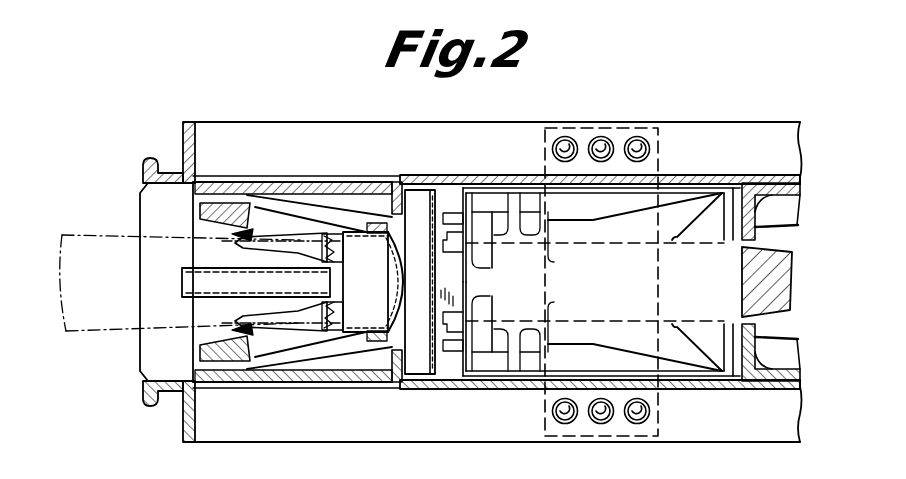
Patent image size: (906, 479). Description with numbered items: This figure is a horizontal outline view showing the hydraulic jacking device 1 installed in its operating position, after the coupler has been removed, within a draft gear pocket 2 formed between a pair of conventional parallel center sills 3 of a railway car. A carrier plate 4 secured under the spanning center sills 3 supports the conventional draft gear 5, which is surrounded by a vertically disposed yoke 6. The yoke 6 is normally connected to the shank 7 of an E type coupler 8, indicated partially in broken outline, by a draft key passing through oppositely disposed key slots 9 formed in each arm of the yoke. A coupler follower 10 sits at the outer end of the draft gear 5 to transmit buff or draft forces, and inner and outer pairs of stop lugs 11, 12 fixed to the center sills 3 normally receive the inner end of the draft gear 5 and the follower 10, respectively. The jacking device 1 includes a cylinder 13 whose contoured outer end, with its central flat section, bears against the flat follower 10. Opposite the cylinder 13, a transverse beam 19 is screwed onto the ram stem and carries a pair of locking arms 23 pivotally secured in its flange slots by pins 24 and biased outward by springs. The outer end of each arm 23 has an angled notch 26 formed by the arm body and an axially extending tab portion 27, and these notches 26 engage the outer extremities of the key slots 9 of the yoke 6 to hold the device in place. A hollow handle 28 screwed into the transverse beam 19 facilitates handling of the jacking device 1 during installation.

The hydraulic jacking device 1 is at (350, 336).
The draft gear pocket 2 is at (449, 197).
The center sills 3 is at (388, 132).
The carrier plate 4 is at (585, 132).
The draft gear 5 is at (580, 357).
The yoke 6 is at (340, 223).
The shank 7 is at (292, 218).
The E type coupler 8 is at (92, 252).
The key slots 9 is at (296, 218).
The coupler follower 10 is at (422, 357).
The inner stop lugs 11 is at (750, 208).
The outer stop lugs 12 is at (397, 183).
The cylinder 13 is at (400, 255).
The transverse beam 19 is at (333, 279).
The locking arms 23 is at (265, 230).
The pins 24 is at (338, 255).
The angled notch 26 is at (247, 229).
The tab portion 27 is at (246, 244).
The hollow handle 28 is at (186, 285).